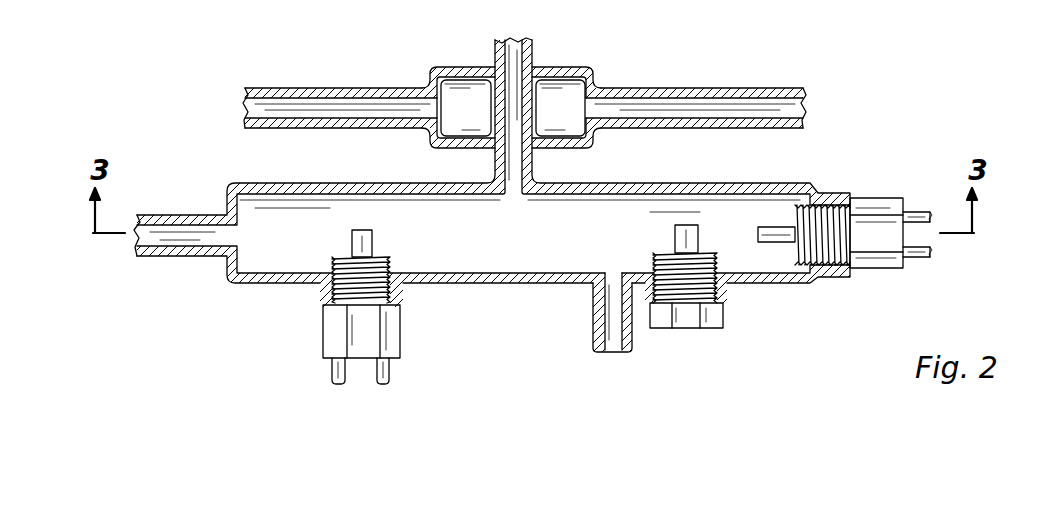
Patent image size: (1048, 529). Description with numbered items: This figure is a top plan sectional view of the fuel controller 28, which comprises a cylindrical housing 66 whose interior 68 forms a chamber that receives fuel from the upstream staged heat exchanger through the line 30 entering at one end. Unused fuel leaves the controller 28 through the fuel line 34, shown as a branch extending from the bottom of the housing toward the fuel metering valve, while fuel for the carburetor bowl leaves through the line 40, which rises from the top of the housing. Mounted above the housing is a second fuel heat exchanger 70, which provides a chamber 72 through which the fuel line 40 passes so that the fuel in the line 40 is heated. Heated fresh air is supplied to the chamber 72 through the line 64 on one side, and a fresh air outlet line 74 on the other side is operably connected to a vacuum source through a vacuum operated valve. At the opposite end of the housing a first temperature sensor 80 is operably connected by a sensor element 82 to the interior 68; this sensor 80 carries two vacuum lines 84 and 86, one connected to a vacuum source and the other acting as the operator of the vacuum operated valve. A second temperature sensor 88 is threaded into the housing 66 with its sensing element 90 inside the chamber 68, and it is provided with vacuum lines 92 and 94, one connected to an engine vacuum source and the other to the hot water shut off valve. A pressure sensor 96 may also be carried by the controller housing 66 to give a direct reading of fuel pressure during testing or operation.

The fuel controller 28 is at (766, 296).
The line 30 is at (162, 216).
The fuel line 34 is at (594, 322).
The line 40 is at (495, 60).
The line 64 is at (332, 88).
The cylindrical housing 66 is at (738, 186).
The interior 68 is at (413, 192).
The second fuel heat exchanger 70 is at (440, 74).
The chamber 72 is at (566, 80).
The fresh air outlet line 74 is at (747, 90).
The first temperature sensor 80 is at (868, 270).
The sensor element 82 is at (773, 226).
The vacuum line 84 is at (920, 256).
The vacuum line 86 is at (916, 210).
The second temperature sensor 88 is at (400, 330).
The sensing element 90 is at (372, 240).
The vacuum line 92 is at (389, 378).
The vacuum line 94 is at (332, 378).
The pressure sensor 96 is at (680, 328).